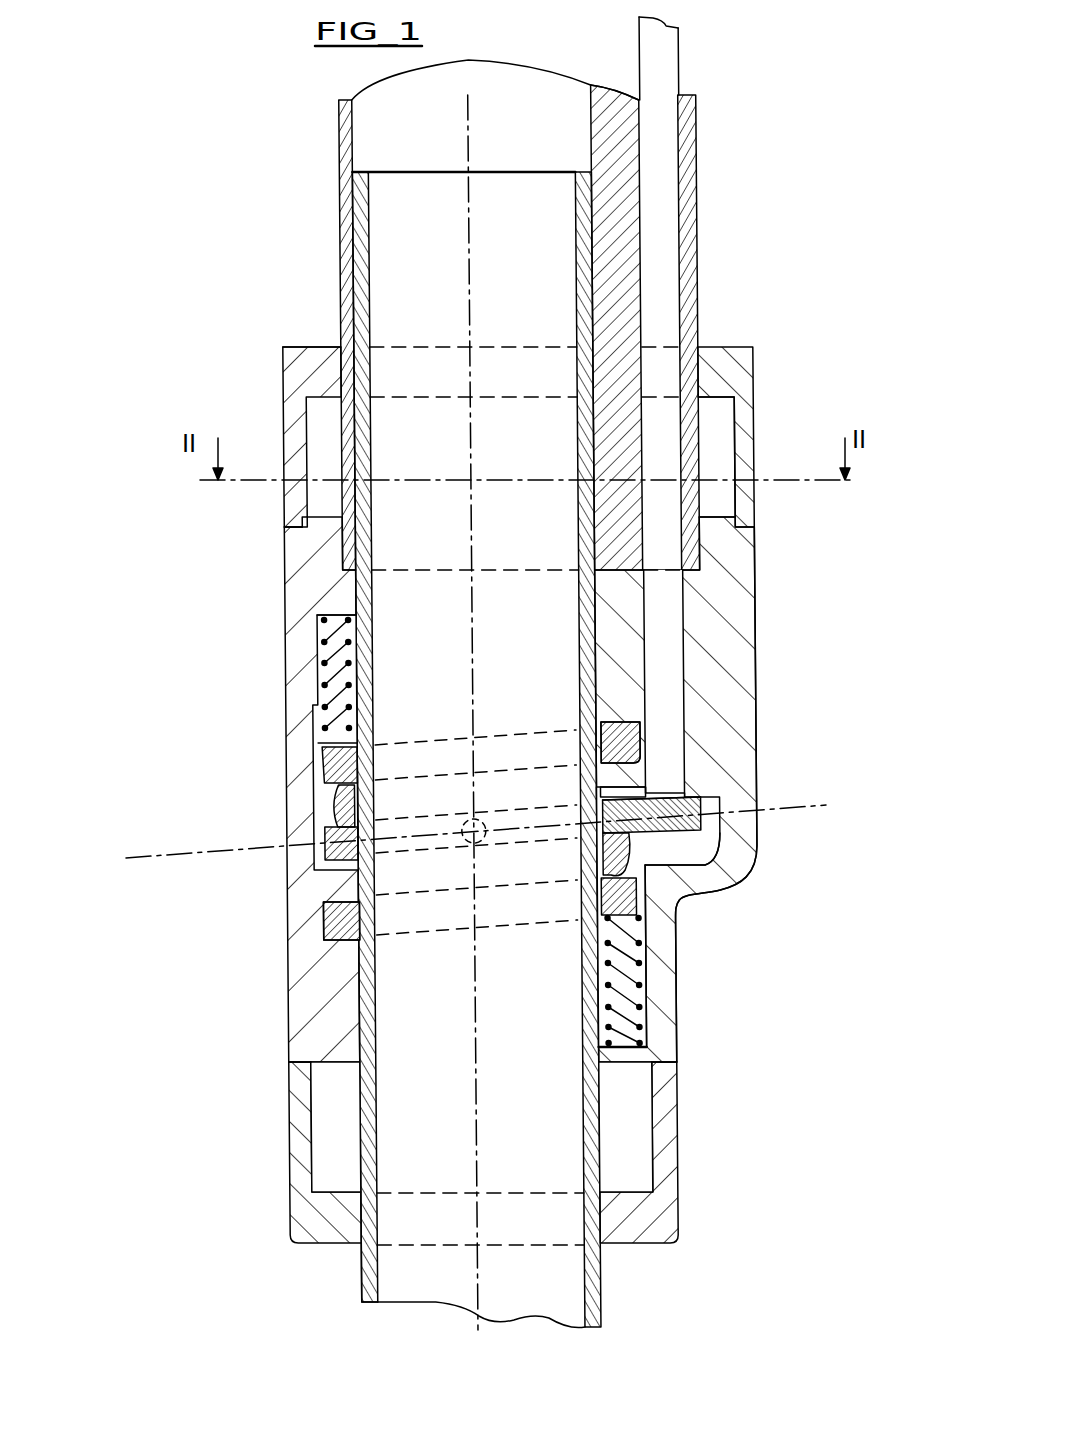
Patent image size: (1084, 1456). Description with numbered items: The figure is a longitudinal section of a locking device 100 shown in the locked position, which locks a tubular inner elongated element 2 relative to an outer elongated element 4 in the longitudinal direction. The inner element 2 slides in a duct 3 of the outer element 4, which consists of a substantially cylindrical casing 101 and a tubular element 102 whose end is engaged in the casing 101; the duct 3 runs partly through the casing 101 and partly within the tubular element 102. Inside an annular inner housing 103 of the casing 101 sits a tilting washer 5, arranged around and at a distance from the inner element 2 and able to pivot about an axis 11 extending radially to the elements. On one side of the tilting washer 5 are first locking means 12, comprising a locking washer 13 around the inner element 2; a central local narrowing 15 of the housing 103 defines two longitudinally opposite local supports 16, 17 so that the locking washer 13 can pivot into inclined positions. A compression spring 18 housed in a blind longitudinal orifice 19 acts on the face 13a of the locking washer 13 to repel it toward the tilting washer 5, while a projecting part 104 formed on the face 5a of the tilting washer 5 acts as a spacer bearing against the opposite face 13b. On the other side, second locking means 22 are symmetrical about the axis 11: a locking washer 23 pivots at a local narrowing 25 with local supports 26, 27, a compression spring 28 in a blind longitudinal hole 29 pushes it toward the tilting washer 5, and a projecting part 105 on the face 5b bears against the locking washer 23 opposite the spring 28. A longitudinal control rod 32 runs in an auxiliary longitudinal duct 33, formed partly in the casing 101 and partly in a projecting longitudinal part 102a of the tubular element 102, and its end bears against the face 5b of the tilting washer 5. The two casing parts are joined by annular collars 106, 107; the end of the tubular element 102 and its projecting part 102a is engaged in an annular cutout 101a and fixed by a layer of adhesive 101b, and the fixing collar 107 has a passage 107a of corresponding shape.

The tubular inner elongated element 2 is at (360, 1262).
The duct 3 is at (360, 305).
The outer elongated element 4 is at (265, 433).
The tilting washer 5 is at (705, 822).
The face of the tilting washer 5a is at (637, 858).
The face of the tilting washer 5b is at (413, 817).
The axis 11 is at (478, 1105).
The first locking means 12 is at (667, 903).
The locking washer 13 is at (645, 915).
The face of the locking washer 13a is at (484, 1022).
The face of the locking washer 13b is at (530, 926).
The central local narrowing 15 is at (323, 905).
The local support 16 is at (537, 884).
The local support 17 is at (323, 880).
The compression spring 18 is at (643, 1003).
The blind longitudinal orifice 19 is at (643, 1022).
The second locking means 22 is at (304, 736).
The locking washer 23 is at (323, 760).
The local narrowing 25 is at (660, 800).
The local support 26 is at (627, 722).
The local support 27 is at (632, 777).
The compression spring 28 is at (330, 688).
The blind longitudinal hole 29 is at (317, 620).
The longitudinal control rod 32 is at (660, 255).
The auxiliary longitudinal duct 33 is at (672, 437).
The locking device 100 is at (721, 632).
The casing 101 is at (757, 552).
The annular cutout 101a is at (328, 588).
The layer of adhesive 101b is at (282, 412).
The tubular element 102 is at (340, 135).
The projecting longitudinal part 102a is at (690, 172).
The annular inner housing 103 is at (682, 852).
The projecting part 104 is at (658, 896).
The projecting part 105 is at (330, 805).
The annular collar 106 is at (650, 1220).
The annular collar 107 is at (750, 370).
The passage 107a is at (700, 345).